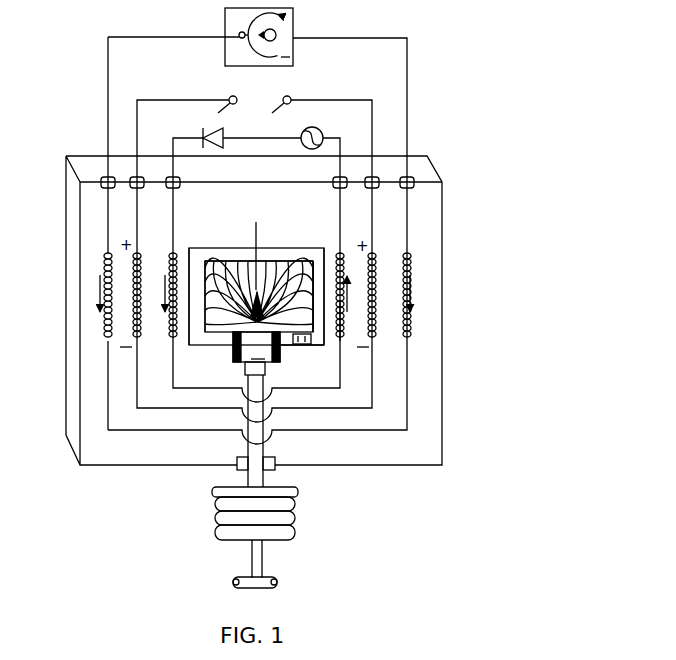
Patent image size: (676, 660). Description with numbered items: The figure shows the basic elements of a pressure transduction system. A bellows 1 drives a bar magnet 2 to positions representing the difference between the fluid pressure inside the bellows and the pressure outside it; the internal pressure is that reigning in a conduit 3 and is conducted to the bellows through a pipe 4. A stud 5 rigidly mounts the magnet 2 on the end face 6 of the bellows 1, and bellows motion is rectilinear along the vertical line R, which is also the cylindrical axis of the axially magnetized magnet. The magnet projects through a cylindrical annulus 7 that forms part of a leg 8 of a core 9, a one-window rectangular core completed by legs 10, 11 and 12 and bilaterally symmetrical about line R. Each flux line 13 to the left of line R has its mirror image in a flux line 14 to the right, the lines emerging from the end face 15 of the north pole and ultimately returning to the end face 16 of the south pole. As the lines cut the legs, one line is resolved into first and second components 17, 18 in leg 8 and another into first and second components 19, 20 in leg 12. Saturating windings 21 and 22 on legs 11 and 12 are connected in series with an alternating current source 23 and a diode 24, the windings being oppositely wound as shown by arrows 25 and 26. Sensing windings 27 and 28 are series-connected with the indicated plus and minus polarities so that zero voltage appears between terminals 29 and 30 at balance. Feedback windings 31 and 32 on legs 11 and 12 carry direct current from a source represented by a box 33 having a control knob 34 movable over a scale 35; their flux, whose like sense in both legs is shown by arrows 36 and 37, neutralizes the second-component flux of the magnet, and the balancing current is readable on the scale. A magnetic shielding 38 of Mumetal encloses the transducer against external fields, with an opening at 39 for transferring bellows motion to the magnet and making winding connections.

The bellows 1 is at (215, 508).
The bar magnet 2 is at (245, 373).
The conduit 3 is at (268, 586).
The pipe 4 is at (263, 560).
The stud 5 is at (250, 452).
The end face 6 is at (226, 487).
The annulus 7 is at (256, 347).
The leg 8 is at (306, 343).
The core 9 is at (226, 248).
The leg 10 is at (296, 248).
The leg 11 is at (196, 322).
The leg 12 is at (322, 333).
The flux line 13 is at (206, 264).
The flux line 14 is at (286, 264).
The end face 15 is at (233, 340).
The end face 16 is at (264, 375).
The first component 17 is at (297, 336).
The second component 18 is at (302, 364).
The first component 19 is at (341, 256).
The second component 20 is at (318, 277).
The saturating winding 21 is at (170, 262).
The saturating winding 22 is at (356, 291).
The alternating current source 23 is at (321, 133).
The diode 24 is at (203, 134).
The arrow 25 is at (152, 293).
The arrow 26 is at (345, 304).
The sensing winding 27 is at (117, 293).
The sensing winding 28 is at (372, 292).
The terminal 29 is at (224, 112).
The terminal 30 is at (275, 112).
The feedback winding 31 is at (106, 262).
The feedback winding 32 is at (406, 262).
The box 33 is at (225, 20).
The control knob 34 is at (276, 35).
The scale 35 is at (258, 58).
The arrow 36 is at (411, 302).
The arrow 37 is at (100, 297).
The magnetic shielding 38 is at (147, 468).
The hole 39 is at (275, 464).